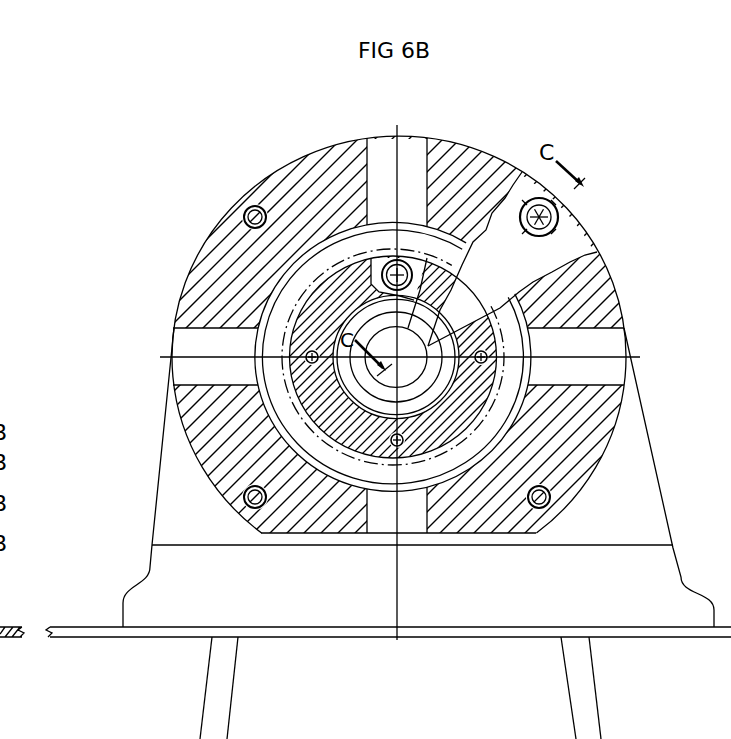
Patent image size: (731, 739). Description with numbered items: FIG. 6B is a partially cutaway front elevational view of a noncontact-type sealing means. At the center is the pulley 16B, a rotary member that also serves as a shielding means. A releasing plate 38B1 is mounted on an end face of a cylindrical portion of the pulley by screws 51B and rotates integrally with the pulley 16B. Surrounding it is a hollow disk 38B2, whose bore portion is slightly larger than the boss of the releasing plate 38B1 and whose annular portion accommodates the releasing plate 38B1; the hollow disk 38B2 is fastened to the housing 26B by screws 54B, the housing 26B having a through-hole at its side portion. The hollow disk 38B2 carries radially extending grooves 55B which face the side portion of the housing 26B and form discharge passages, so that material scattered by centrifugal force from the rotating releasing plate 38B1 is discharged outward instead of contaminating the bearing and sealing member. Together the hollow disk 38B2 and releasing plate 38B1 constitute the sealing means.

The hollow disk 38B2 is at (238, 247).
The radially extending grooves 55B is at (410, 164).
The pulley 16B is at (318, 392).
The releasing plate 38B1 is at (455, 303).
The screws 51B is at (372, 256).
The screws 54B is at (560, 220).
The housing 26B is at (192, 508).